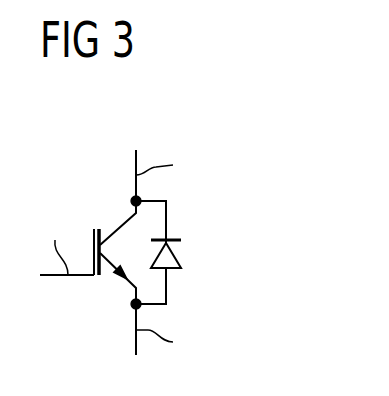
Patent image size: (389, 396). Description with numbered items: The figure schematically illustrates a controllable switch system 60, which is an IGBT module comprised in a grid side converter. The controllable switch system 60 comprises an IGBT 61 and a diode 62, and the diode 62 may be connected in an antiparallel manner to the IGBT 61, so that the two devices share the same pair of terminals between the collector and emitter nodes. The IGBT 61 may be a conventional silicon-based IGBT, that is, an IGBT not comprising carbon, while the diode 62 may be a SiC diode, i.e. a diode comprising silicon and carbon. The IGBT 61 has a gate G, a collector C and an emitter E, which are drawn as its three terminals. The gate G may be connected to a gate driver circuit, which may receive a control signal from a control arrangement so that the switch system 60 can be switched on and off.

The controllable switch system 60 is at (268, 131).
The IGBT 61 is at (100, 227).
The diode 62 is at (180, 250).